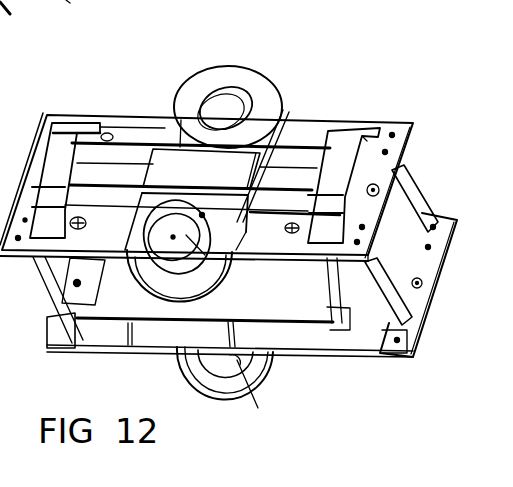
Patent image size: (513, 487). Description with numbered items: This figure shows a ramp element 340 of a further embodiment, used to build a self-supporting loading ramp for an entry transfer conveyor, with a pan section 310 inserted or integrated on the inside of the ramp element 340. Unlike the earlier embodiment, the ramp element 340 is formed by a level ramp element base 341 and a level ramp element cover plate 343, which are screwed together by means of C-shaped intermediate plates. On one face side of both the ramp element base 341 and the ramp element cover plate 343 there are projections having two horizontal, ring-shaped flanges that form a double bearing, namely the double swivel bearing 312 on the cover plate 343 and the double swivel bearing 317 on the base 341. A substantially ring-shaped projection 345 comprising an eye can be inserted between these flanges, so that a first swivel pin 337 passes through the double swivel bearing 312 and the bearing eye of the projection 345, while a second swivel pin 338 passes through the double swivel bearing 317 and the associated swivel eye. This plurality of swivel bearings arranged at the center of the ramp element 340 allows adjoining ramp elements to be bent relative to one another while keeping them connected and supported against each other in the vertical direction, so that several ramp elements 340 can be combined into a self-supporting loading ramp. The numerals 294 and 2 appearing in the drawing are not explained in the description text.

The tether line 294 is at (1, 125).
The ramp element cover plate 343 is at (132, 133).
The ring-shaped projection 345 is at (231, 74).
The ramp element 340 is at (345, 79).
The first swivel pin 337 is at (215, 262).
The double swivel bearing 312 is at (182, 298).
The double swivel bearing 317 is at (262, 362).
The ramp element base 341 is at (83, 352).
The second swivel pin 338 is at (250, 405).
The pan section 310 is at (350, 370).
The mounting block 2 is at (58, 263).